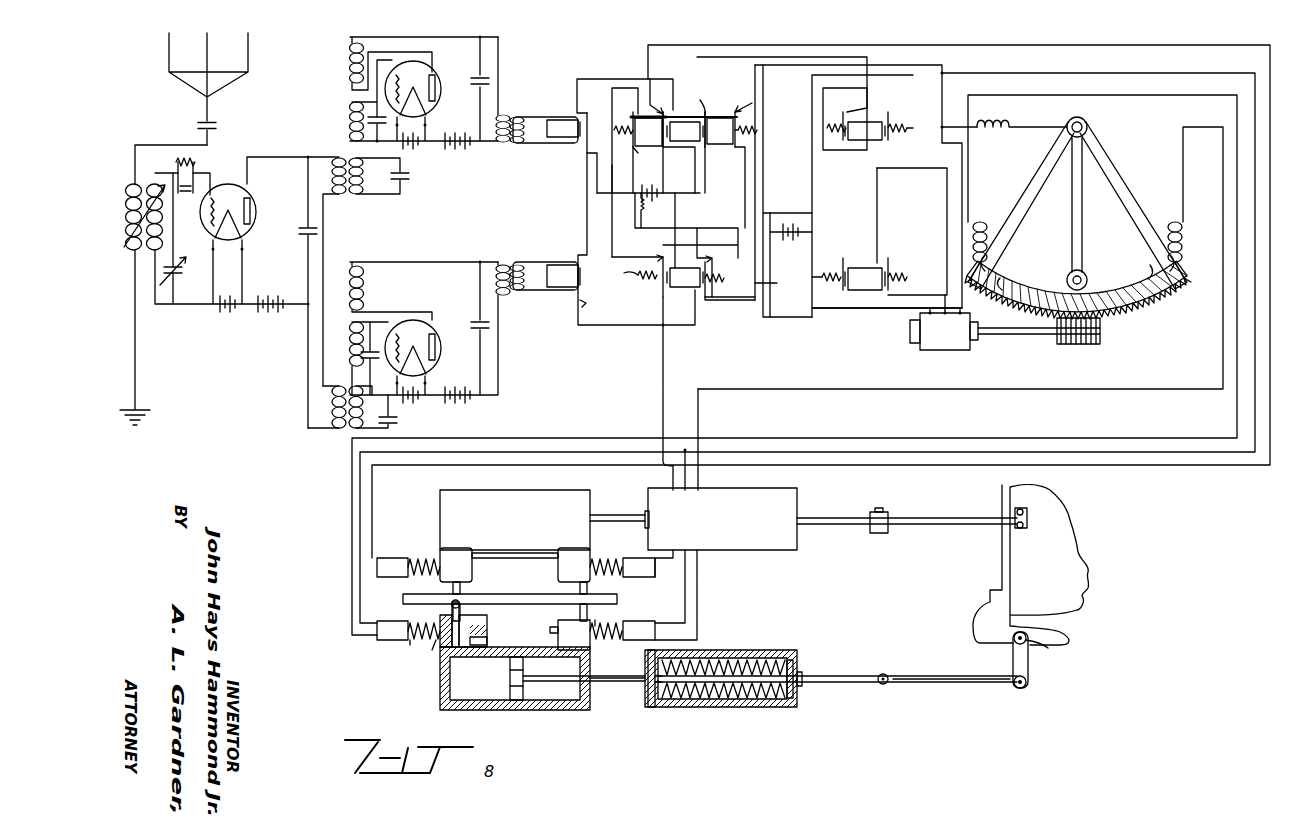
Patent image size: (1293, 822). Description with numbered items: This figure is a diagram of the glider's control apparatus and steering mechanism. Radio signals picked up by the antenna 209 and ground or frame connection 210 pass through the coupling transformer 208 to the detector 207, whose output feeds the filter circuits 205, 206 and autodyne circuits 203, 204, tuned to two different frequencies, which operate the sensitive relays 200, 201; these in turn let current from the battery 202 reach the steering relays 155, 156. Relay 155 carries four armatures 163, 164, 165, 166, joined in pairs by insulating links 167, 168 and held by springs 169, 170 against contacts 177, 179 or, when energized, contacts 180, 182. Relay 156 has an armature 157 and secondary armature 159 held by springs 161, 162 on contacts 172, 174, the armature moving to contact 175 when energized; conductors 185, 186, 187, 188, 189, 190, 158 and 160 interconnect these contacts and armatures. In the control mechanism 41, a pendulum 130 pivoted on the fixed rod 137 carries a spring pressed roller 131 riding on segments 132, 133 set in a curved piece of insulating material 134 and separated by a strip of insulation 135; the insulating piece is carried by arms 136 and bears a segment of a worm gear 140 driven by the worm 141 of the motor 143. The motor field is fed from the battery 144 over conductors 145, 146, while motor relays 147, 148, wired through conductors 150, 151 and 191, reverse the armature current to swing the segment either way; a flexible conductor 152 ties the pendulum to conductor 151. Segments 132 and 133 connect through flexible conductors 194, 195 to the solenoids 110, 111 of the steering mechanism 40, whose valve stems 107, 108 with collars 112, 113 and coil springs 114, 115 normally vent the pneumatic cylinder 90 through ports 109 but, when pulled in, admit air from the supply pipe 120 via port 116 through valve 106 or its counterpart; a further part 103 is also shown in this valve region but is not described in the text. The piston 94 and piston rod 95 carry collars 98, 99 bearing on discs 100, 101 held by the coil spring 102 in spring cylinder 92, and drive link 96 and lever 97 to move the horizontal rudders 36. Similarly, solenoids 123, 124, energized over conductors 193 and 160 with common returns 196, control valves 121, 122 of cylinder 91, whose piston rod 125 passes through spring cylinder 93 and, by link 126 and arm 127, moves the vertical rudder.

The antenna 209 is at (175, 80).
The coupling transformer 208 is at (152, 174).
The detector 207 is at (247, 292).
The ground or frame connection 210 is at (150, 425).
The autodyne circuit 203 is at (430, 97).
The autodyne circuit 204 is at (430, 336).
The filter circuit 205 is at (386, 272).
The filter circuit 206 is at (373, 410).
The sensitive relay 200 is at (561, 119).
The sensitive relay 201 is at (563, 265).
The battery 202 is at (655, 210).
The conductor 193 is at (699, 44).
The conductors 196 is at (1000, 63).
The flexible conductor 194 is at (969, 157).
The flexible conductor 195 is at (1184, 163).
The conductor 190 is at (746, 58).
The conductor 187 is at (610, 111).
The contact 180 is at (627, 170).
The contact 177 is at (666, 96).
The spring 169 is at (613, 127).
The link of insulating material 167 is at (649, 129).
The armature 163 is at (629, 164).
The armature 164 is at (651, 153).
The armature 166 is at (766, 150).
The conductor 185 is at (667, 186).
The branch conductor 186 is at (680, 170).
The steering relay 155 is at (684, 181).
The armature 165 is at (721, 170).
The contact 182 is at (718, 99).
The link of insulating material 168 is at (722, 129).
The spring 170 is at (764, 117).
The contact 179 is at (764, 99).
The conductor 189 is at (766, 173).
The conductor 188 is at (756, 173).
The conductor 151 is at (756, 189).
The contact 174 is at (637, 249).
The contact 175 is at (721, 262).
The spring 162 is at (627, 273).
The secondary armature 159 is at (644, 277).
The steering relay 156 is at (676, 288).
The contact 172 is at (726, 271).
The armature 157 is at (933, 131).
The conductor 158 is at (726, 305).
The conductor 160 is at (660, 317).
The spring 161 is at (782, 283).
The battery 144 is at (786, 247).
The conductor 146 is at (803, 316).
The conductor 150 is at (828, 196).
The motor relay 148 is at (872, 113).
The conductor 191 is at (868, 181).
The control mechanism 41 is at (912, 231).
The motor relay 147 is at (895, 285).
The conductor 145 is at (853, 314).
The motor 143 is at (958, 352).
The worm 141 is at (1102, 342).
The flexible conductor 152 is at (1028, 125).
The fixed rod 137 is at (1094, 117).
The arms 136 is at (1021, 185).
The pendulum 130 is at (1060, 229).
The spring pressed roller 131 is at (1064, 264).
The segment 132 is at (1002, 269).
The curved piece of insulating material 134 is at (1006, 285).
The strip of insulation 135 is at (1099, 275).
The segment 133 is at (1116, 279).
The segment of a worm gear 140 is at (1150, 317).
The pneumatic cylinder 91 is at (440, 519).
The piston rod 125 is at (600, 509).
The spring cylinder 93 is at (770, 555).
The valve 121 is at (468, 570).
The valve 122 is at (556, 573).
The solenoid 123 is at (387, 560).
The solenoid 124 is at (644, 578).
The compressed air supply pipe 120 is at (532, 594).
The coil spring 114 is at (406, 619).
The solenoid 111 is at (646, 616).
The valve 106 is at (560, 623).
The valve stem 108 is at (540, 634).
The ports 109 is at (444, 620).
The valve stem 103 is at (468, 610).
The port 116 is at (483, 627).
The valve stem 107 is at (482, 636).
The pneumatic cylinder 90 is at (440, 704).
The piston 94 is at (520, 703).
The collar 98 is at (640, 661).
The collar 113 is at (600, 654).
The spring cylinder 92 is at (720, 709).
The coil spring 102 is at (730, 653).
The disc 100 is at (660, 711).
The collar 99 is at (794, 695).
The disc 101 is at (790, 711).
The piston rod 95 is at (609, 685).
The link 96 is at (929, 674).
The lever 97 is at (1030, 671).
The horizontal rudders 36 is at (1050, 651).
The link 126 is at (902, 513).
The arm 127 is at (1032, 523).
The steering mechanism 40 is at (846, 593).
The solenoid 110 is at (394, 649).
The collar 112 is at (417, 660).
The coil spring 115 is at (597, 621).